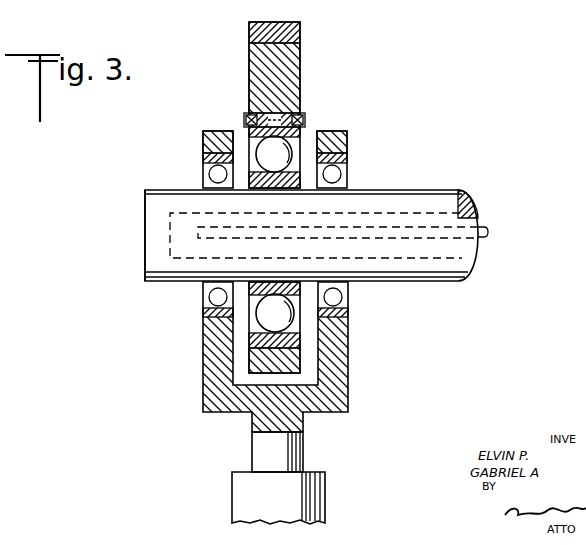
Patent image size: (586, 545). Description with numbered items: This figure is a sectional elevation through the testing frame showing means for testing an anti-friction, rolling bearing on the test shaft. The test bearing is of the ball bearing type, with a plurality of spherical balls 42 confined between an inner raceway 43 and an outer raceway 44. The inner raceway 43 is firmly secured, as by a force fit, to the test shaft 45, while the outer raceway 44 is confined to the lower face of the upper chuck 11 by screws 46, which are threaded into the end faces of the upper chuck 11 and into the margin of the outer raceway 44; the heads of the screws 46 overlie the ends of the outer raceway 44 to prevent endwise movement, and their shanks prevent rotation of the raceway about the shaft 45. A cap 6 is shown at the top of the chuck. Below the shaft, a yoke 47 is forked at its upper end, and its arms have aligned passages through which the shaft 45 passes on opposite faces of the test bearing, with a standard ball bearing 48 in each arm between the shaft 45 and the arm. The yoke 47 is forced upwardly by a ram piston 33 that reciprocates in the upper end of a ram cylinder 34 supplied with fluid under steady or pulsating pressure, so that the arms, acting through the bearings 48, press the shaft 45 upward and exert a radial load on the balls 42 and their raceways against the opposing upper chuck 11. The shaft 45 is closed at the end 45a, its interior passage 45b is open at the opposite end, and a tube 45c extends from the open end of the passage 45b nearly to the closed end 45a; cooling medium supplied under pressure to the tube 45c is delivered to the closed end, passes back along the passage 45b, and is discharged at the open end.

The cap 6 is at (299, 34).
The upper chuck 11 is at (288, 77).
The ram piston 33 is at (265, 447).
The ram cylinder 34 is at (247, 498).
The spherical balls 42 is at (263, 152).
The inner raceway 43 is at (256, 188).
The outer raceway 44 is at (273, 118).
The test shaft 45 is at (440, 197).
The closed end 45a is at (145, 242).
The interior passage 45b is at (478, 212).
The tube 45c is at (488, 233).
The screws 46 is at (247, 117).
The yoke 47 is at (203, 134).
The standard ball bearings 48 is at (203, 173).